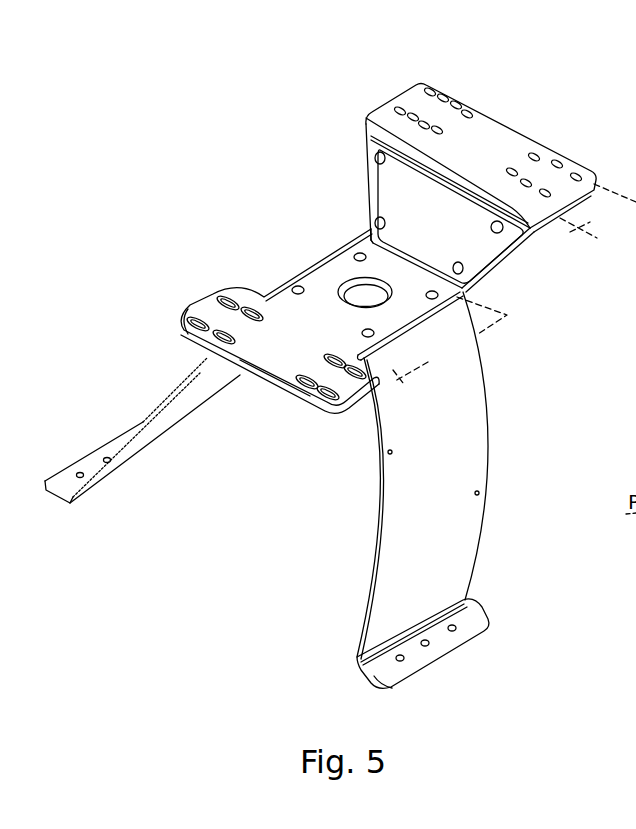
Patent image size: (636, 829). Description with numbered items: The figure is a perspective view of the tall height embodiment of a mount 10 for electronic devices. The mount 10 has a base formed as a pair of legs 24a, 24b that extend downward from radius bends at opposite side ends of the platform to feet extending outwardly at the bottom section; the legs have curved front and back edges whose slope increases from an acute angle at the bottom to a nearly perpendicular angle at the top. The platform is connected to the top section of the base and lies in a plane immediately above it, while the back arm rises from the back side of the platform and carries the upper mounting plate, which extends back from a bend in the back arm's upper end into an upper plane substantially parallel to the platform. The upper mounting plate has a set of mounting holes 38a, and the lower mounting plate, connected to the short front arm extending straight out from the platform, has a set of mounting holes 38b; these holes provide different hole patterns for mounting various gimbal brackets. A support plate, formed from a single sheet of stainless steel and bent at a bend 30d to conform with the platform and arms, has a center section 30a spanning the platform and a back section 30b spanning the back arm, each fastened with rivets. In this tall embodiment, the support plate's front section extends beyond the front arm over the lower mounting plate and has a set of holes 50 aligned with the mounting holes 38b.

The mount 10 is at (122, 82).
The center section 30a is at (400, 306).
The back section 30b is at (377, 185).
The bend 30d is at (370, 236).
The mounting holes 38a is at (560, 165).
The mounting holes 38b is at (328, 393).
The holes 50 is at (343, 360).
The leg 24a is at (437, 455).
The leg 24b is at (160, 443).